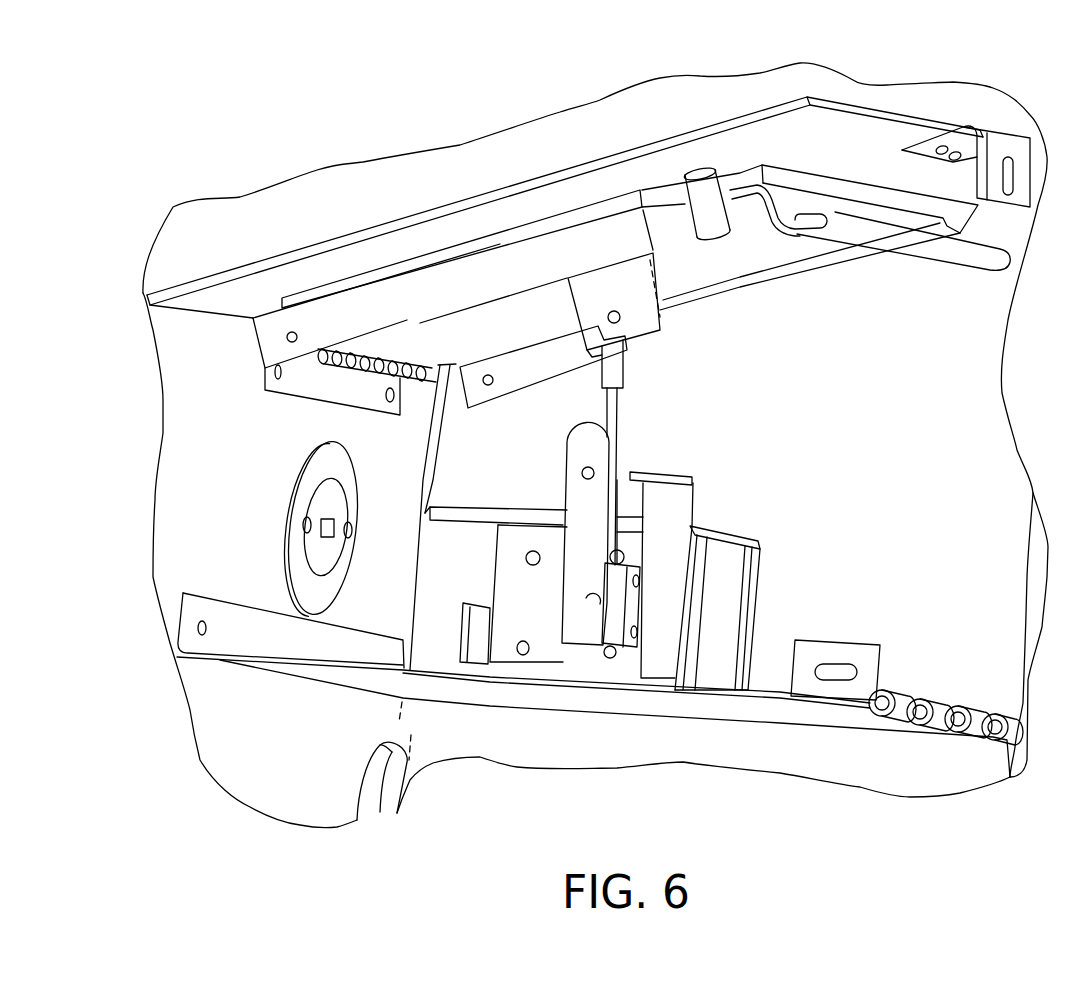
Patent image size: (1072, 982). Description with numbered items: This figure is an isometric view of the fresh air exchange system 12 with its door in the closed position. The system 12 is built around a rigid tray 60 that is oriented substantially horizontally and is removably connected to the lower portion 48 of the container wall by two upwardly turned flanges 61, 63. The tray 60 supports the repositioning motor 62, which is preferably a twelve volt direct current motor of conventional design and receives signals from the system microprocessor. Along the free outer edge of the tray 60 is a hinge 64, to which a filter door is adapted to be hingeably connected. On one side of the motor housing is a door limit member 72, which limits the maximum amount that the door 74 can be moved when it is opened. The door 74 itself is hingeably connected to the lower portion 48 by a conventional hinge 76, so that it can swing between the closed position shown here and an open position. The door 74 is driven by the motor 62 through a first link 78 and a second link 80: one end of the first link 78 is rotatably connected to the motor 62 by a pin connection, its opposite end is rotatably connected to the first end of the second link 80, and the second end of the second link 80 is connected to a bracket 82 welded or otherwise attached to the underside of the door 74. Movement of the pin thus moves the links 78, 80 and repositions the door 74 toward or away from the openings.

The fresh air exchange system 12 is at (848, 434).
The lower portion of wall 48 is at (245, 750).
The rigid tray 60 is at (727, 710).
The upwardly turned flange 61 is at (845, 650).
The repositioning motor 62 is at (750, 540).
The upwardly turned flange 63 is at (227, 620).
The hinge 64 is at (940, 720).
The door limit member 72 is at (667, 472).
The door 74 is at (750, 258).
The hinge 76 is at (357, 397).
The first link 78 is at (555, 458).
The second link 80 is at (617, 372).
The bracket 82 is at (593, 313).